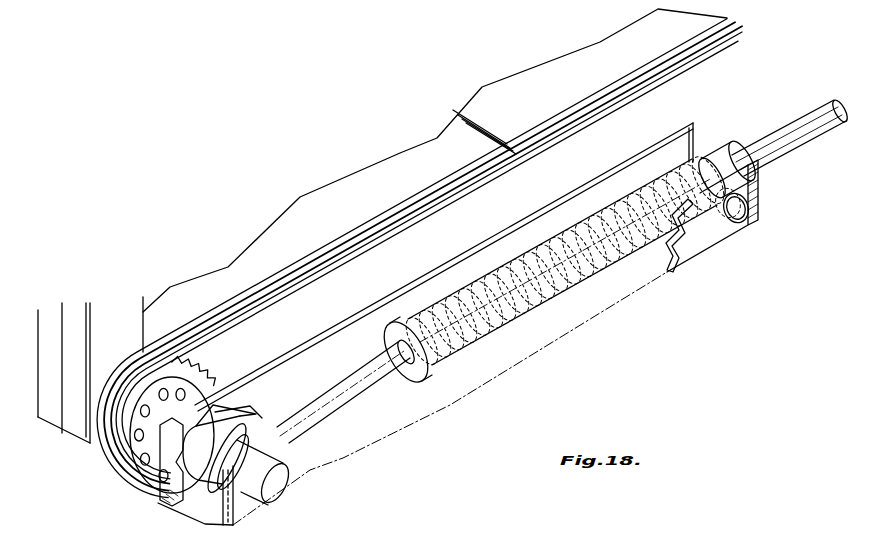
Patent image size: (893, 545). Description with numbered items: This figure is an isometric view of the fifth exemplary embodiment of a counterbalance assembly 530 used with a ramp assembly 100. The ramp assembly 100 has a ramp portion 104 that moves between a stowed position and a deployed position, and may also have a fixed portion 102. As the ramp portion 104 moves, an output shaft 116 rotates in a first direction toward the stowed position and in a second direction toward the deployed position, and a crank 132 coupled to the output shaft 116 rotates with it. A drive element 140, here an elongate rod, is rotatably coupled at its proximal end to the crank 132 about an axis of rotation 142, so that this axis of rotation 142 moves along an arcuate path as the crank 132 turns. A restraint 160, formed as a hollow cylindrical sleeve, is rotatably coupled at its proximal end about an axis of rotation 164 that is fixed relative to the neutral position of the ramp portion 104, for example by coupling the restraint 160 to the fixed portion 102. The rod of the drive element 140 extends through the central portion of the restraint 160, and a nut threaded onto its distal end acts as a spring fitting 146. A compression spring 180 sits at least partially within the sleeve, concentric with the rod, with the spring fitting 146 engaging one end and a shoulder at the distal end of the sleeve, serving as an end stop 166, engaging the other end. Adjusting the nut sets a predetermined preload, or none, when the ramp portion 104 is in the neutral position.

The ramp assembly 100 is at (283, 163).
The fixed portion 102 is at (720, 238).
The ramp portion 104 is at (78, 437).
The output shaft 116 is at (287, 483).
The crank 132 is at (213, 457).
The drive element 140 is at (350, 403).
The axis of rotation 142 is at (288, 436).
The spring fitting 146 is at (735, 142).
The restraint 160 is at (537, 313).
The axis of rotation 164 is at (722, 190).
The end stop 166 is at (420, 395).
The compression spring 180 is at (632, 270).
The counterbalance assembly 530 is at (616, 336).